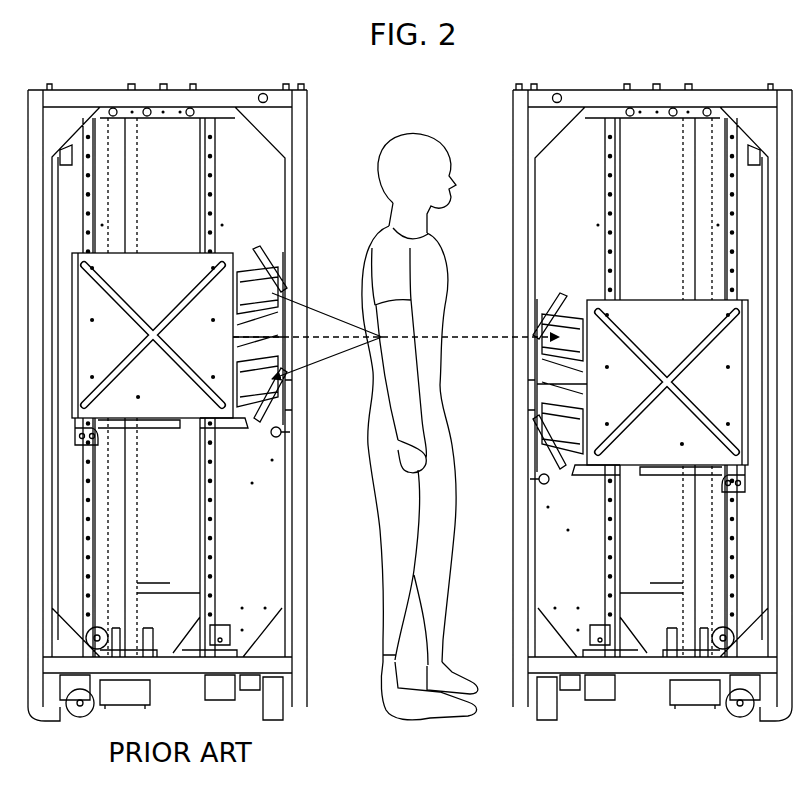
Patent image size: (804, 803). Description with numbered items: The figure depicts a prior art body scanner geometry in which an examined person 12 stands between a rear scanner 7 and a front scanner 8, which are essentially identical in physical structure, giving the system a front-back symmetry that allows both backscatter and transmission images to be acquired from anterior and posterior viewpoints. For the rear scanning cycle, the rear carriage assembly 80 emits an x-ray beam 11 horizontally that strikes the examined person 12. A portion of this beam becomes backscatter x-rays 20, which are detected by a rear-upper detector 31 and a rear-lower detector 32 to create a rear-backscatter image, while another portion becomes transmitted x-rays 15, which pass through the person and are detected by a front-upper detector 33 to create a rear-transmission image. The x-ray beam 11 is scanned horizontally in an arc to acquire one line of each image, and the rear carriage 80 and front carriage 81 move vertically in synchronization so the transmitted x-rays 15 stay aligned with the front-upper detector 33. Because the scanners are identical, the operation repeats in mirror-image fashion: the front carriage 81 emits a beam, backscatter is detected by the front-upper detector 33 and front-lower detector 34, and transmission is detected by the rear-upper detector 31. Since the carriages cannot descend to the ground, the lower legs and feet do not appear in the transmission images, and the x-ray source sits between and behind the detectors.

The rear scanner 7 is at (332, 96).
The front scanner 8 is at (480, 97).
The rear carriage assembly 80 is at (165, 253).
The front carriage 81 is at (650, 300).
The rear-upper detector 31 is at (258, 292).
The rear-lower detector 32 is at (260, 383).
The front-upper detector 33 is at (553, 334).
The front-lower detector 34 is at (560, 426).
The examined person 12 is at (423, 237).
The x-ray beam 11 is at (336, 337).
The transmitted x-rays 15 is at (486, 338).
The backscatter x-rays 20 is at (343, 353).